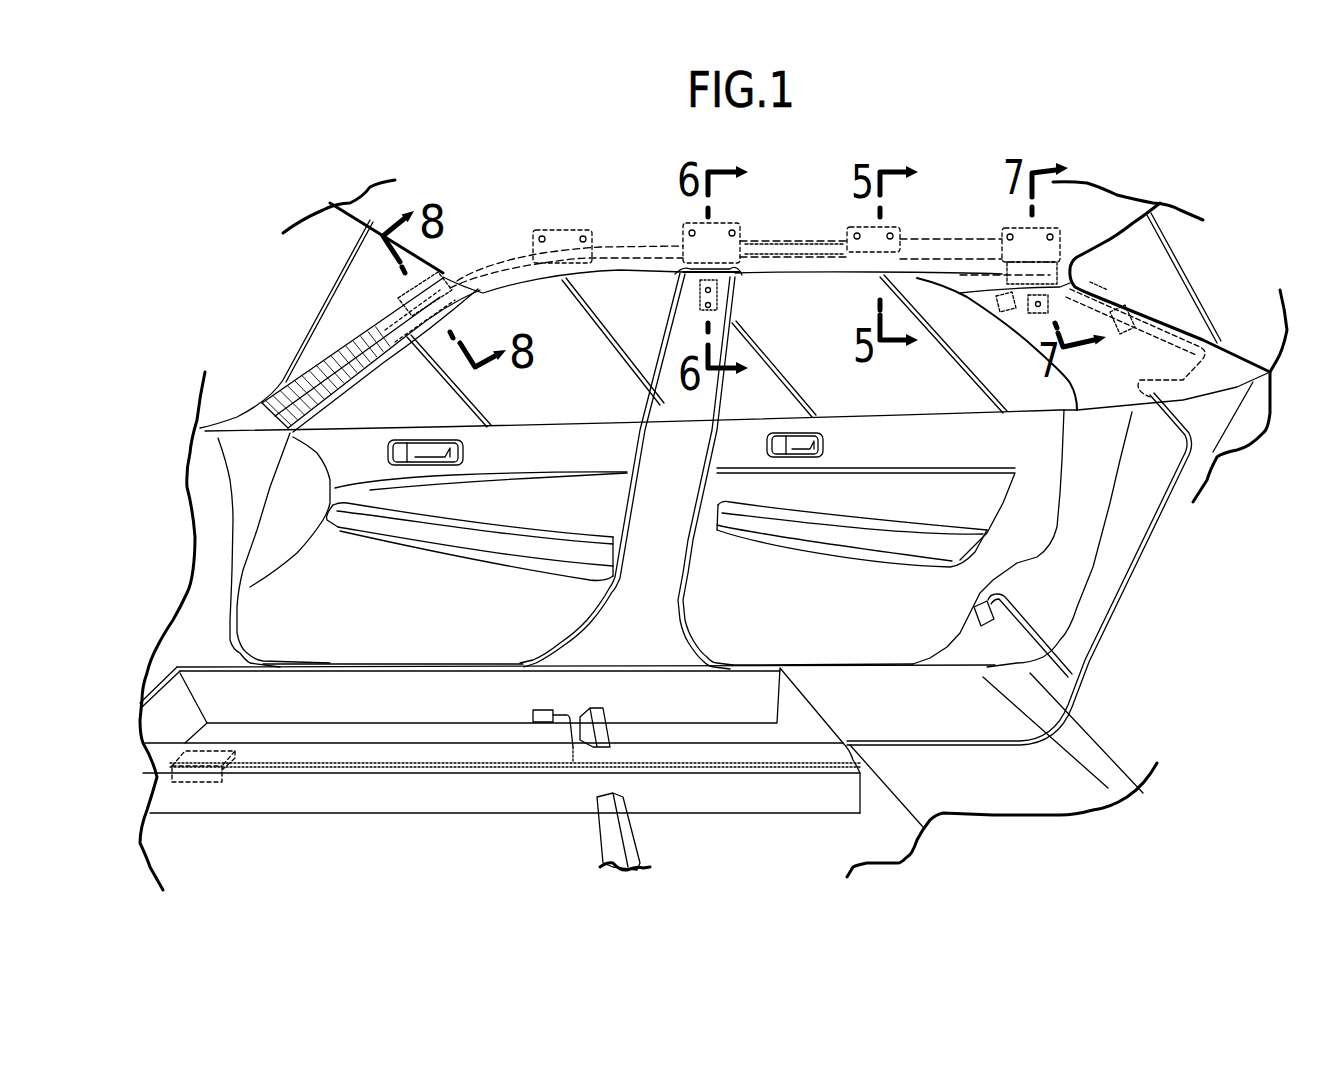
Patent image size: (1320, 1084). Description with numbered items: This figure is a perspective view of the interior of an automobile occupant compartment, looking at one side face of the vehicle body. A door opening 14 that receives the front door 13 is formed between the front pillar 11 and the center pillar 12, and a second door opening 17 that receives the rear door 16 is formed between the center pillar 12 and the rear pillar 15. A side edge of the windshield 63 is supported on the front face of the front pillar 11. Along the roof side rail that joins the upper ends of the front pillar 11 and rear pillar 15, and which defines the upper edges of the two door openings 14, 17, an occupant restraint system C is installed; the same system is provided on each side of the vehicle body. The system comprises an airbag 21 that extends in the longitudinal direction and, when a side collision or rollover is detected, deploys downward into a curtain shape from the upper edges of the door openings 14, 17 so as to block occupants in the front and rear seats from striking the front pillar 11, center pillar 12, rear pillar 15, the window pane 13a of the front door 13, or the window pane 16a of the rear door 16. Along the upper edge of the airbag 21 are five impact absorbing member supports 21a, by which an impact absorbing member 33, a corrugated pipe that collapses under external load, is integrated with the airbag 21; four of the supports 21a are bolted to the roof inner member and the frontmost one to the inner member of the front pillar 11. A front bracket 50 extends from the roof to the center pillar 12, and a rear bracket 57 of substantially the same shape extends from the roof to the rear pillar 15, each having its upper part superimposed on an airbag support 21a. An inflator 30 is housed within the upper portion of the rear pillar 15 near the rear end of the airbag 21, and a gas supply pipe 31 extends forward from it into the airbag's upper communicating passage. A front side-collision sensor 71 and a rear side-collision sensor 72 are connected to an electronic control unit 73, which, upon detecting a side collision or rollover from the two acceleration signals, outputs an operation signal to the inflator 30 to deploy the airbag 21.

The front pillar 11 is at (313, 367).
The center pillar 12 is at (670, 417).
The front door 13 is at (546, 520).
The window pane of the front door 13a is at (520, 400).
The door opening 14 is at (535, 278).
The rear pillar 15 is at (1083, 383).
The rear door 16 is at (896, 512).
The window pane of the rear door 16a is at (873, 400).
The door opening 17 is at (837, 280).
The airbag 21 is at (627, 275).
The impact absorbing member support 21a is at (395, 296).
The inflator 30 is at (1180, 317).
The gas supply pipe 31 is at (1103, 277).
The impact absorbing member 33 is at (797, 243).
The front bracket 50 is at (737, 300).
The rear bracket 57 is at (1000, 308).
The windshield 63 is at (338, 226).
The front side-collision sensor 71 is at (533, 710).
The rear side-collision sensor 72 is at (974, 608).
The electronic control unit 73 is at (200, 783).
The occupant restraint system C is at (632, 245).